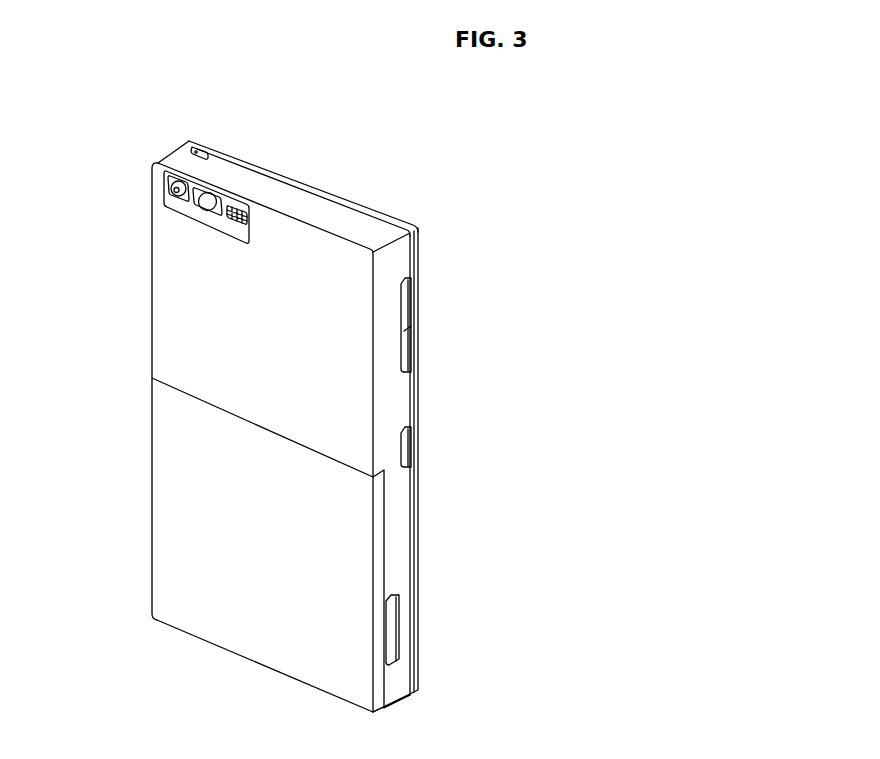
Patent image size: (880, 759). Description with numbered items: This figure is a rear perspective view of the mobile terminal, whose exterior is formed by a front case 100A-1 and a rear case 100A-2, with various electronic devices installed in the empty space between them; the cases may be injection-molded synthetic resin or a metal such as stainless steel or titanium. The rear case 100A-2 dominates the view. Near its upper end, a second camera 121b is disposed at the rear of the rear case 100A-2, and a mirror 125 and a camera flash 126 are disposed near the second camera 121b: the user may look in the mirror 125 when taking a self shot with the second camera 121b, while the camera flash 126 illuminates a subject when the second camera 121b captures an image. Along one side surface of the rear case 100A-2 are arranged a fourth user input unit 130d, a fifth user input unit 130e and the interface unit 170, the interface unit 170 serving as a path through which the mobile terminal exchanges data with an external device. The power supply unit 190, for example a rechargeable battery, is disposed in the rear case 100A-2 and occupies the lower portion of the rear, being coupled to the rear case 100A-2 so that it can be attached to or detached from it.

The front case 100A-1 is at (206, 147).
The rear case 100A-2 is at (172, 153).
The mirror 125 is at (177, 194).
The second camera 121b is at (207, 192).
The camera flash 126 is at (240, 207).
The fourth user input unit 130d is at (411, 300).
The fifth user input unit 130e is at (411, 446).
The interface unit 170 is at (393, 635).
The power supply unit 190 is at (175, 498).